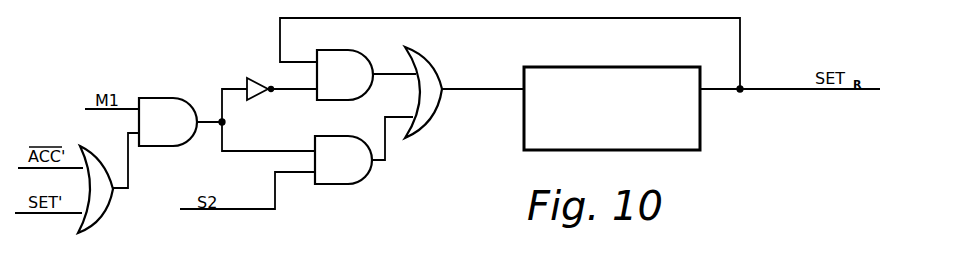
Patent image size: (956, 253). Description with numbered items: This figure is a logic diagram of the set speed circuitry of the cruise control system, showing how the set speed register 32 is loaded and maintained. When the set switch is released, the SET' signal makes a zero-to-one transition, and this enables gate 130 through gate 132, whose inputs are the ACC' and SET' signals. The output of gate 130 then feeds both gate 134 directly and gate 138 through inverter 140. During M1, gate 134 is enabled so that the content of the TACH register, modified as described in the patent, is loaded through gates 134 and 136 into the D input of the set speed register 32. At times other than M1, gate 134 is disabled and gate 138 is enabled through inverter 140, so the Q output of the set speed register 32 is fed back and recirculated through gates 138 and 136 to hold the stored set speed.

The set speed register 32 is at (646, 76).
The gate 130 is at (167, 107).
The gate 132 is at (98, 203).
The gate 134 is at (355, 165).
The gate 136 is at (427, 63).
The gate 138 is at (335, 88).
The inverter 140 is at (255, 80).